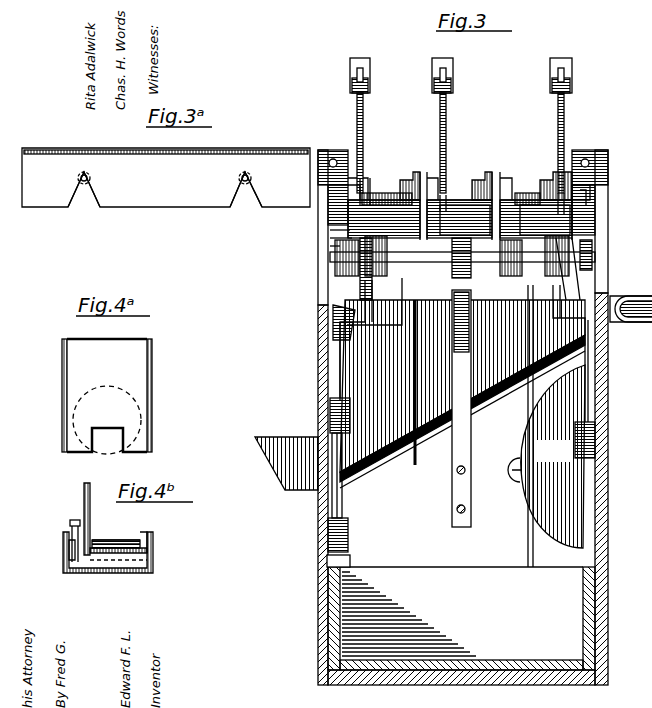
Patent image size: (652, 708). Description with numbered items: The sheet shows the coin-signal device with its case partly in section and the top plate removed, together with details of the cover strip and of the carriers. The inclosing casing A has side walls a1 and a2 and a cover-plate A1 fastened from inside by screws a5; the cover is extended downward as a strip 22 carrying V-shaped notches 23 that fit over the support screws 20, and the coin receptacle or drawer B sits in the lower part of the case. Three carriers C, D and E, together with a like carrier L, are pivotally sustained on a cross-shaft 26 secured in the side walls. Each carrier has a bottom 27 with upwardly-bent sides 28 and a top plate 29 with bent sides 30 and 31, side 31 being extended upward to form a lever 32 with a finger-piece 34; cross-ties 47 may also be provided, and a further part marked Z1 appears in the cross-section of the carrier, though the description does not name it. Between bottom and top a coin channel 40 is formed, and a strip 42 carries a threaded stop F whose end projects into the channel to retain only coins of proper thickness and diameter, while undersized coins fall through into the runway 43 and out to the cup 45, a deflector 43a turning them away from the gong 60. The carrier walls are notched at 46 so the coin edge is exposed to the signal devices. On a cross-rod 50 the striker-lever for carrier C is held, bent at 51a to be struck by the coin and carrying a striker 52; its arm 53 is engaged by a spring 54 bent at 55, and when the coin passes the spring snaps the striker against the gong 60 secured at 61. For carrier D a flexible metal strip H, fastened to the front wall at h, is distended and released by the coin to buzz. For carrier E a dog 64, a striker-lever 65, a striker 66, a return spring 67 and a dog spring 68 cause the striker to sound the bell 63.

In FIG. 3A, the screw 20 is at (90, 176).
In FIG. 3A, the depending strip of cover-plate 22 is at (140, 218).
In FIG. 3A, the V-shaped notch 23 is at (92, 210).
In FIG. 3, the cross-shaft 26 is at (336, 244).
In FIG. 3, the carrier bottom 27 is at (520, 195).
In FIG. 4A, the carrier bottom 27 is at (107, 395).
In FIG. 4B, the carrier bottom 27 is at (122, 575).
In FIG. 3, the upwardly-bent side of carrier bottom 28 is at (512, 178).
In FIG. 4A, the upwardly-bent side of carrier bottom 28 is at (60, 383).
In FIG. 4B, the upwardly-bent side of carrier bottom 28 is at (66, 560).
In FIG. 3, the carrier top plate 29 is at (405, 193).
In FIG. 4B, the carrier top plate 29 is at (115, 540).
In FIG. 3, the side of top plate 30 is at (487, 180).
In FIG. 4B, the side of top plate 30 is at (153, 535).
In FIG. 3, the side of top plate 31 is at (364, 190).
In FIG. 3, the lever 32 is at (572, 112).
In FIG. 3, the finger-piece 34 is at (471, 75).
In FIG. 3, the coin channel 40 is at (584, 192).
In FIG. 4B, the strip 42 is at (70, 540).
In FIG. 3, the runway 43 is at (412, 430).
In FIG. 3, the deflector 43a is at (330, 318).
In FIG. 3, the cup or receiver 45 is at (272, 462).
In FIG. 3, the notch 46 is at (375, 200).
In FIG. 4A, the notch 46 is at (90, 452).
In FIG. 4B, the cross-tie 47 is at (135, 540).
In FIG. 3, the cross-rod 50 is at (460, 262).
In FIG. 3, the arm of striker-lever 51a is at (360, 298).
In FIG. 3, the striker 52 is at (332, 332).
In FIG. 3, the arm 53 is at (350, 232).
In FIG. 3, the spring 54 is at (360, 270).
In FIG. 3, the bent end of spring 55 is at (348, 212).
In FIG. 3, the gong 60 is at (342, 493).
In FIG. 3, the gong attachment 61 is at (348, 530).
In FIG. 3, the bell 63 is at (546, 456).
In FIG. 3, the dog 64 is at (582, 228).
In FIG. 3, the striker-lever 65 is at (588, 300).
In FIG. 3, the striker 66 is at (595, 440).
In FIG. 3, the spring 67 is at (588, 260).
In FIG. 3, the spring 68 is at (528, 392).
In FIG. 3, the inclosing casing A is at (449, 417).
In FIG. 3A, the cover-plate A1 is at (110, 148).
In FIG. 3, the side wall a1 is at (318, 370).
In FIG. 3, the side wall a2 is at (608, 403).
In FIG. 3, the screw a5 is at (590, 154).
In FIG. 3, the coin receptacle or drawer B is at (461, 618).
In FIG. 3, the carrier C is at (384, 173).
In FIG. 3, the carrier D is at (459, 175).
In FIG. 3, the carrier E is at (536, 178).
In FIG. 4A, the stop F is at (60, 418).
In FIG. 4B, the stop F is at (68, 518).
In FIG. 3, the flexible strip H is at (471, 436).
In FIG. 3, the attachment of flexible strip h is at (465, 474).
In FIG. 4A, the carrier L is at (165, 358).
In FIG. 4B, the bottom Z' Z1 is at (153, 558).